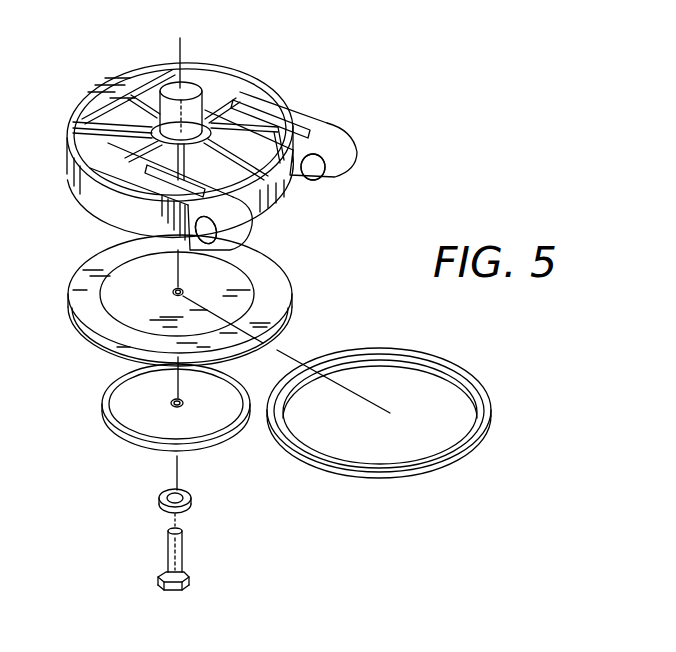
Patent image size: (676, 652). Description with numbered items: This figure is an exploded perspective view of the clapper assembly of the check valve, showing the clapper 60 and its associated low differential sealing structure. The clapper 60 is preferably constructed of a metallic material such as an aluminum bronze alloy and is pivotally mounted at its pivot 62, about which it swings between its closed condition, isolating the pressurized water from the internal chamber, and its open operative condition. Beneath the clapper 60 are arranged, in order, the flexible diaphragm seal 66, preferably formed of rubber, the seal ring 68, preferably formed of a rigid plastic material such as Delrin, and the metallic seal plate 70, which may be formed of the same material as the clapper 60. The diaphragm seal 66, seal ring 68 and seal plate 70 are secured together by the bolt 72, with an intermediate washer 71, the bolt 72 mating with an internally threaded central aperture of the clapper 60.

The clapper 60 is at (261, 88).
The pivot 62 is at (313, 173).
The flexible diaphragm seal 66 is at (274, 298).
The seal ring 68 is at (457, 452).
The seal plate 70 is at (138, 448).
The washer 71 is at (190, 499).
The bolt 72 is at (183, 556).